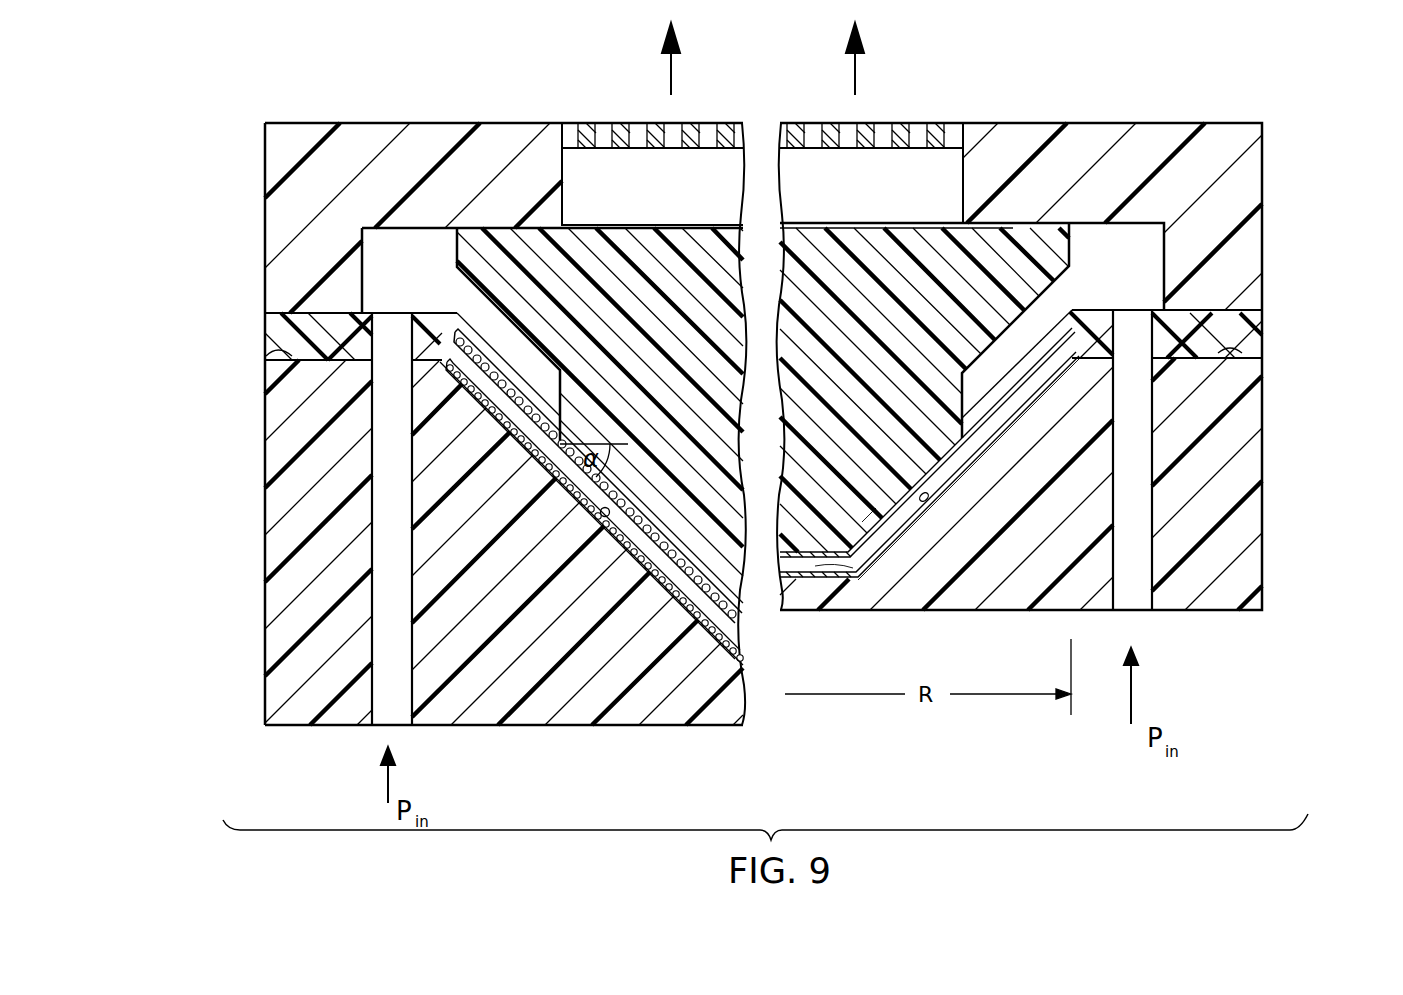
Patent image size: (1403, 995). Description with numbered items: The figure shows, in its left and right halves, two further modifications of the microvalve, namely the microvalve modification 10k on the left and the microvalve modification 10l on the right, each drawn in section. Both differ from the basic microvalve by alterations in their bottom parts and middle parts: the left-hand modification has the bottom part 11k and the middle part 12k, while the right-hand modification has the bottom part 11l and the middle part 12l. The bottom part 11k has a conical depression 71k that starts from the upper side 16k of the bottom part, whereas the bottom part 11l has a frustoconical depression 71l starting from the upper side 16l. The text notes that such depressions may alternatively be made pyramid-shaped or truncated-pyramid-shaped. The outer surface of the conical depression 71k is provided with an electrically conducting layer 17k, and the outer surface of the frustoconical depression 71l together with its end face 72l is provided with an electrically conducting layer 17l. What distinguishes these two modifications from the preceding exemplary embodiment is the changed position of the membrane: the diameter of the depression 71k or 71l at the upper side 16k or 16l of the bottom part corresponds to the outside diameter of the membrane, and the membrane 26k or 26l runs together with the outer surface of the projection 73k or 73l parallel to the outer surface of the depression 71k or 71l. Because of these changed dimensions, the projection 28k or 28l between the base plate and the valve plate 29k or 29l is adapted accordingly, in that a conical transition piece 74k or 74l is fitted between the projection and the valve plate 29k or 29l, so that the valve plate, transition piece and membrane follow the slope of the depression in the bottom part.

The microvalve modification 10k is at (252, 532).
The bottom part 11k is at (267, 617).
The middle part 12k is at (252, 343).
The upper side 16k is at (263, 356).
The electrically conducting layer 17k is at (566, 474).
The membrane 26k is at (492, 392).
The projection 28k is at (525, 447).
The valve plate 29k is at (457, 249).
The conical depression 71k is at (602, 517).
The projection 73k is at (680, 542).
The conical transition piece 74k is at (520, 328).
The microvalve modification 10l is at (1277, 551).
The bottom part 11l is at (1232, 588).
The middle part 12l is at (1277, 320).
The upper side 16l is at (1242, 353).
The electrically conducting layer 17l is at (963, 457).
The membrane 26l is at (1022, 380).
The projection 28l is at (996, 425).
The valve plate 29l is at (1064, 243).
The frustoconical depression 71l is at (929, 500).
The end face 72l is at (855, 572).
The projection 73l is at (872, 531).
The conical transition piece 74l is at (1040, 300).